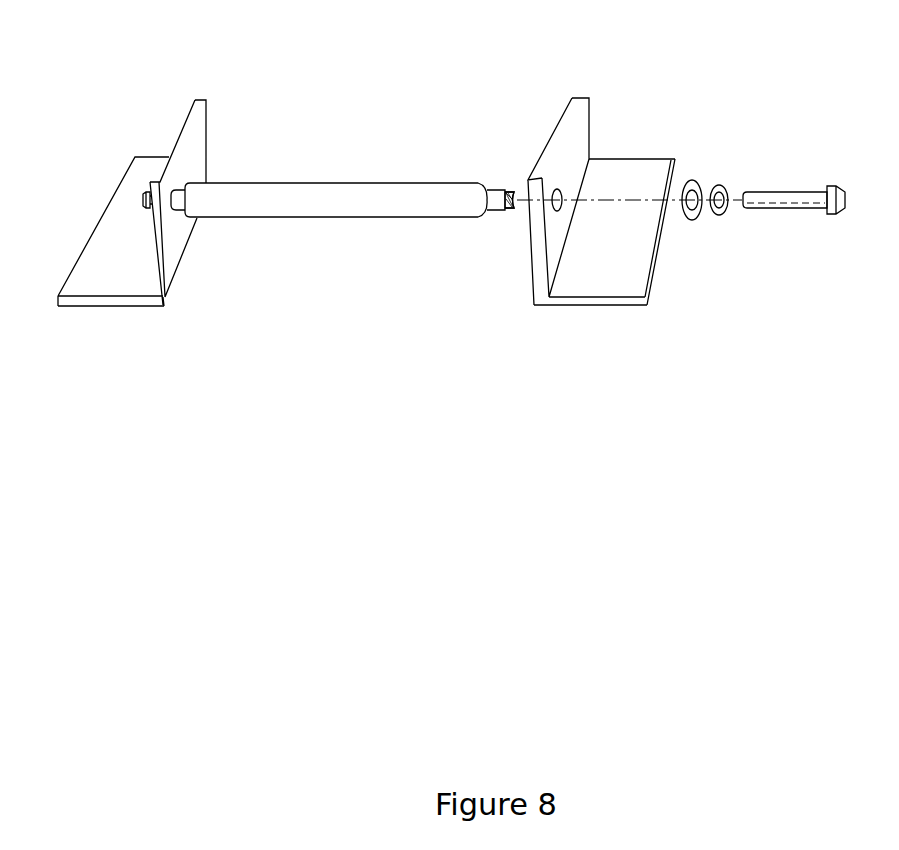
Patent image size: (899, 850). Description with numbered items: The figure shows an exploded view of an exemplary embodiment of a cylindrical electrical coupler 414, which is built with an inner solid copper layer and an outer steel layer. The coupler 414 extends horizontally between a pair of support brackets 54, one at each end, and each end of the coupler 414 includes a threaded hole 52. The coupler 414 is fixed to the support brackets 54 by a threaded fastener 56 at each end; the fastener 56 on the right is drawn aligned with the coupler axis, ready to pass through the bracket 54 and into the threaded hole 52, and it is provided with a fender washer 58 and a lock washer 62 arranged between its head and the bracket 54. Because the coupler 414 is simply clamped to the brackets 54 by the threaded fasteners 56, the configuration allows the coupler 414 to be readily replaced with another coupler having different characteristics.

The cylindrical electrical coupler 414 is at (397, 173).
The threaded hole 52 is at (521, 191).
The support bracket 54 is at (166, 156).
The threaded fastener 56 is at (145, 200).
The fender washer 58 is at (690, 182).
The lock washer 62 is at (718, 185).